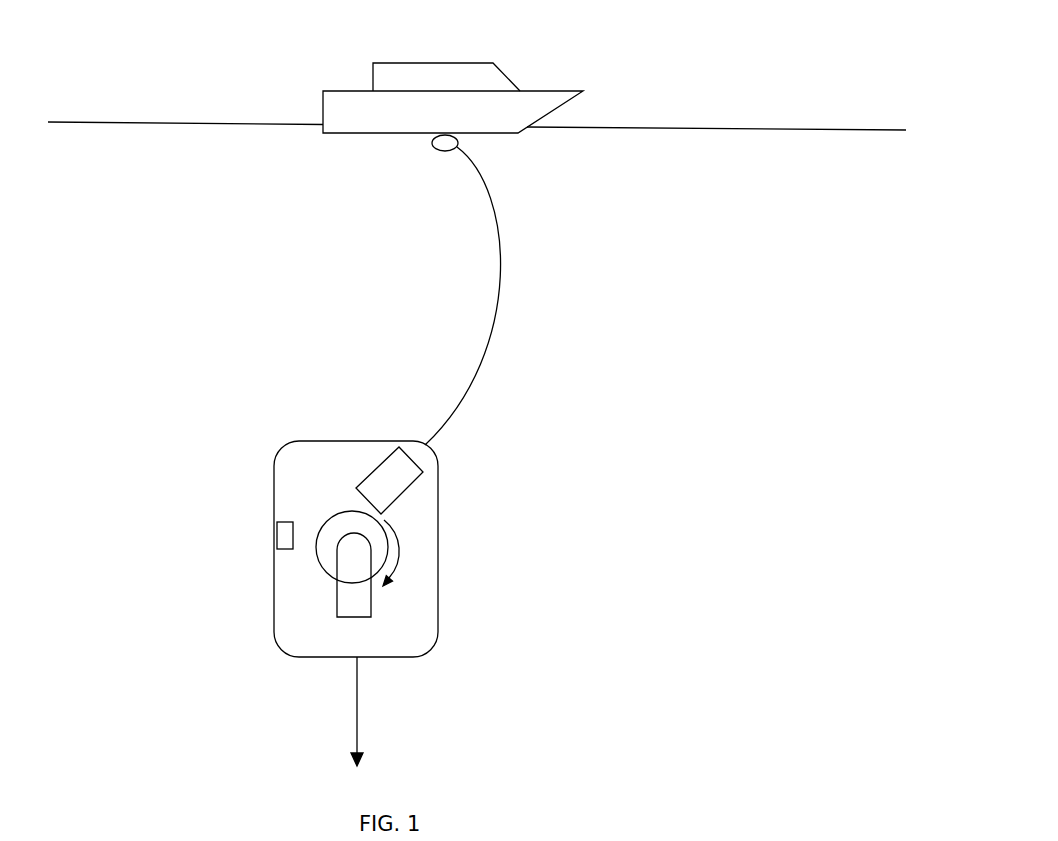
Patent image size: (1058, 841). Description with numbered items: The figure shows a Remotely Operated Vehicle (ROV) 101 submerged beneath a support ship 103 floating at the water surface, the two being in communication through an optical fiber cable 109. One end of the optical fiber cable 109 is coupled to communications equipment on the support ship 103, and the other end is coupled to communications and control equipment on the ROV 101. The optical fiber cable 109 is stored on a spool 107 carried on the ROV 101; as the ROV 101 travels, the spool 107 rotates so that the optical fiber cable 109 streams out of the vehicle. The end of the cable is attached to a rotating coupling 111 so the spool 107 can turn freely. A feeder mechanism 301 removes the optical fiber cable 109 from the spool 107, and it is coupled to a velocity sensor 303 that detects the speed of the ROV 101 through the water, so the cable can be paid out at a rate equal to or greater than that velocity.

The Remotely Operated Vehicle (ROV) 101 is at (451, 634).
The support ship 103 is at (483, 82).
The spool 107 is at (374, 540).
The optical fiber cable 109 is at (499, 276).
The rotating coupling 111 is at (352, 548).
The feeder mechanism 301 is at (397, 475).
The velocity sensor 303 is at (278, 533).